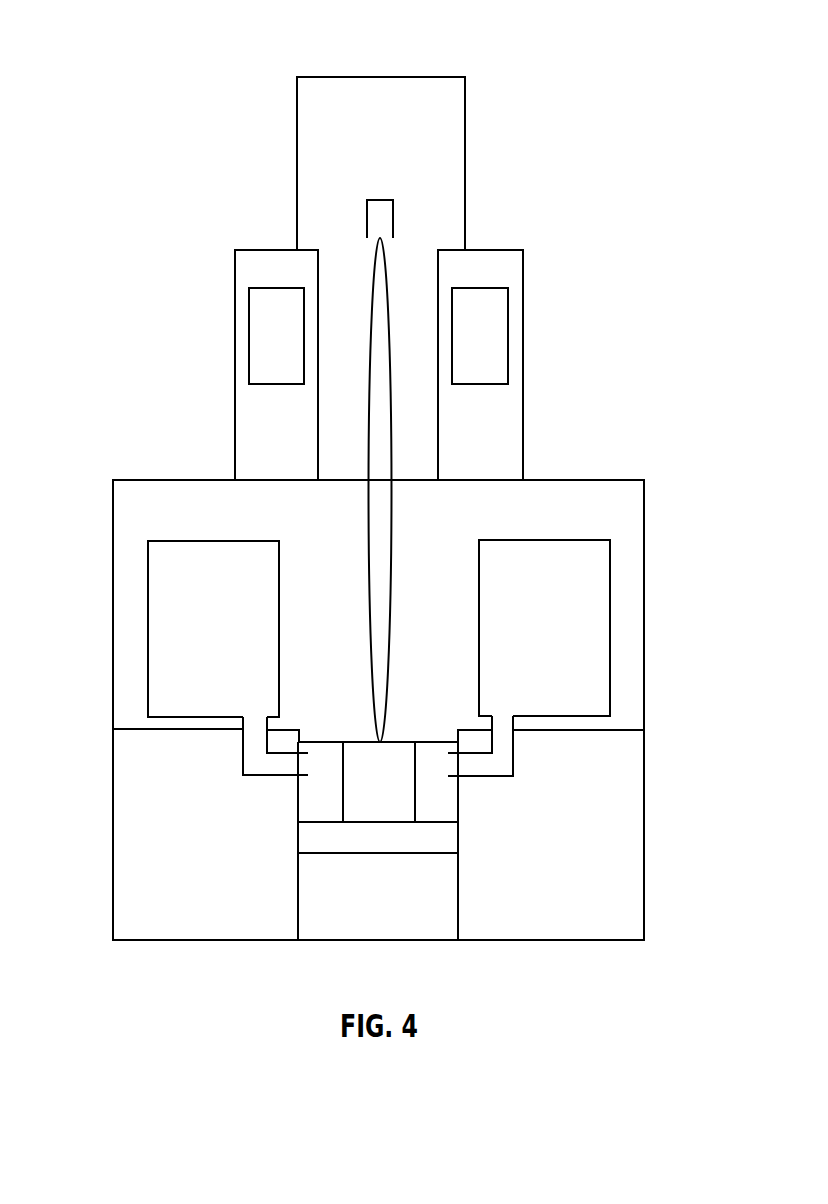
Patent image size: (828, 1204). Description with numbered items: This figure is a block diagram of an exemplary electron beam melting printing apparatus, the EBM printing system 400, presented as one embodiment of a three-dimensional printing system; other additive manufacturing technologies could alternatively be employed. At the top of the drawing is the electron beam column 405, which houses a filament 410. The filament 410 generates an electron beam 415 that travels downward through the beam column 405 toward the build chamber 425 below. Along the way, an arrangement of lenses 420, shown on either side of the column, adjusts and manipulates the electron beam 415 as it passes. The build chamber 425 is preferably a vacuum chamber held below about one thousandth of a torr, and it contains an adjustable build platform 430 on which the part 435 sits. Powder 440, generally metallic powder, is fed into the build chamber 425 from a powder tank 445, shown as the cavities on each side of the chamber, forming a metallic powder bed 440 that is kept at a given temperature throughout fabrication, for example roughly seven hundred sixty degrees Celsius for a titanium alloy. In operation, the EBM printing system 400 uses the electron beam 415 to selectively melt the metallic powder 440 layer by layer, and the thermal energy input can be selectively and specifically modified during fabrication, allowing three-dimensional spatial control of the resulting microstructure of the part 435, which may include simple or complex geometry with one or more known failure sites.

The EBM printing system 400 is at (133, 69).
The electron beam column 405 is at (465, 162).
The filament 410 is at (367, 220).
The electron beam 415 is at (368, 472).
The lenses 420 is at (249, 332).
The build chamber 425 is at (318, 791).
The adjustable build platform 430 is at (335, 843).
The part 435 is at (363, 752).
The powder 440 is at (445, 806).
The powder tank 445 is at (162, 630).